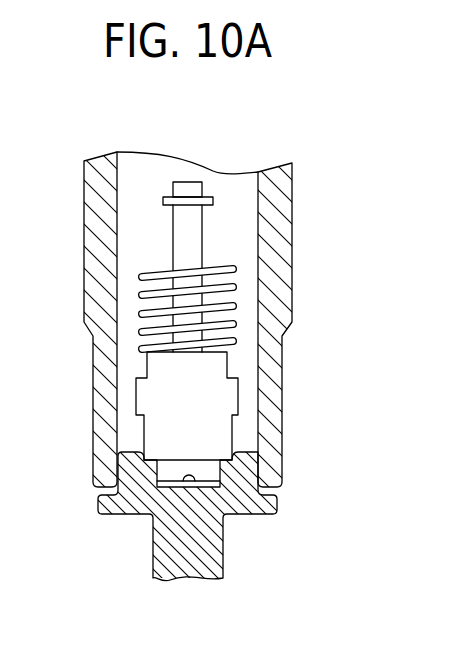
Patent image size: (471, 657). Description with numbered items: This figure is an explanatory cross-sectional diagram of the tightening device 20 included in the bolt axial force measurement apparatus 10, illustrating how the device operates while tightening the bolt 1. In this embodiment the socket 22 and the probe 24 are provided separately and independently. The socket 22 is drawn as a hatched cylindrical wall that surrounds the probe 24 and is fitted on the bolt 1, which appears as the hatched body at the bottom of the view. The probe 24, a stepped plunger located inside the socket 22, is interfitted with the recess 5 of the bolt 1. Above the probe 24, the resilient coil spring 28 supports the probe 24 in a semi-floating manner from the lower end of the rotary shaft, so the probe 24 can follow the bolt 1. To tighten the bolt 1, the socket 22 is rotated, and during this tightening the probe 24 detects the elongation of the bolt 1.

The bolt axial force measurement apparatus 10 is at (259, 307).
The tightening device 20 is at (259, 307).
The socket 22 is at (284, 268).
The resilient coil spring 28 is at (142, 313).
The probe 24 is at (213, 432).
The bolt 1 is at (272, 507).
The recess 5 is at (191, 488).